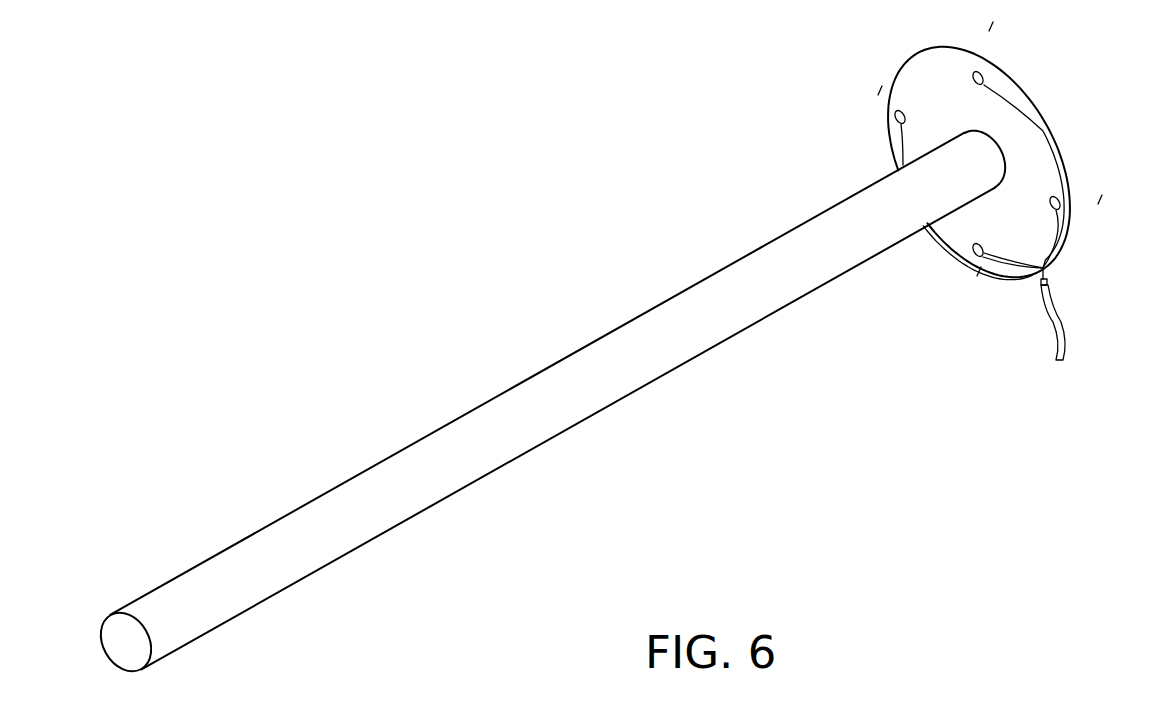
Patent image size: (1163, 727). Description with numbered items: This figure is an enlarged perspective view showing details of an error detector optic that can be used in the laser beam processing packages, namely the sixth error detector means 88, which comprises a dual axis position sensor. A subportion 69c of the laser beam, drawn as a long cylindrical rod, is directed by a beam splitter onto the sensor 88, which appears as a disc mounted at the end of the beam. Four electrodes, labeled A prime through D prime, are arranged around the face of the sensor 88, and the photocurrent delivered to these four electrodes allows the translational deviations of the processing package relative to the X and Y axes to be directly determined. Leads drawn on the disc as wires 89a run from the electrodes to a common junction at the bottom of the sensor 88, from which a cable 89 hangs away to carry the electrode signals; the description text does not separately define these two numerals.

The subportion of the laser beam 69c is at (537, 432).
The sixth error detector means 88 is at (1012, 85).
The lead wires on disc 89a is at (1040, 147).
The cable 89 is at (1065, 335).